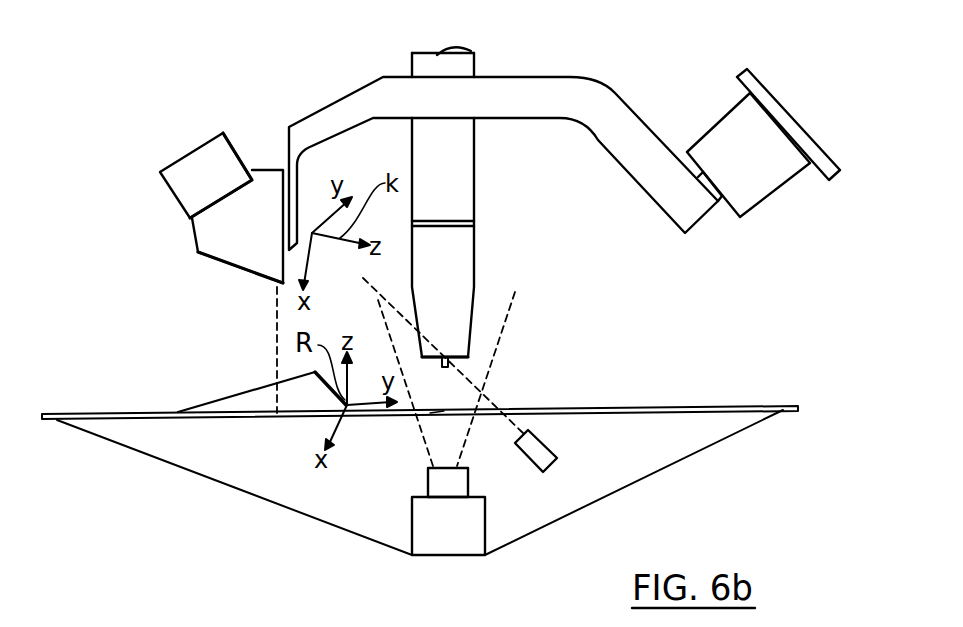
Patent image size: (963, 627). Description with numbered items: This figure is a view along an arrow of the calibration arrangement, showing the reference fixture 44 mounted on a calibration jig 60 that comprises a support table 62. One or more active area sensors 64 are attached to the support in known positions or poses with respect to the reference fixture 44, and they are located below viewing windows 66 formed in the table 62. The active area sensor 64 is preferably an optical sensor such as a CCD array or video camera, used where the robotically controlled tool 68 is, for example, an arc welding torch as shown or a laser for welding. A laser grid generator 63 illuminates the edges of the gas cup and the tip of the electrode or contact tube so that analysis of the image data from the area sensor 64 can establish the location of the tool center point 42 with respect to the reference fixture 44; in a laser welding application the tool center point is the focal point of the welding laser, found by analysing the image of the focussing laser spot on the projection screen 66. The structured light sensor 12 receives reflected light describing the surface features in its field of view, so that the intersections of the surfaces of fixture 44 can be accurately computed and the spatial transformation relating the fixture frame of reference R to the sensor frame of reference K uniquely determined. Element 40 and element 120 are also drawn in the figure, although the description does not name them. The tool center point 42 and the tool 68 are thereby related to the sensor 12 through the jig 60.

The structured light sensor 12 is at (208, 242).
The sensor 40 is at (793, 119).
The tool center point (TCP) 42 is at (449, 361).
The reference fixture 44 is at (207, 406).
The calibration jig 60 is at (767, 403).
The support table 62 is at (137, 422).
The laser grid generator 63 is at (533, 453).
The active area sensor 64 is at (460, 556).
The viewing window 66 is at (437, 414).
The robotically controlled tool 68 is at (462, 263).
The reference axis 120 is at (275, 343).